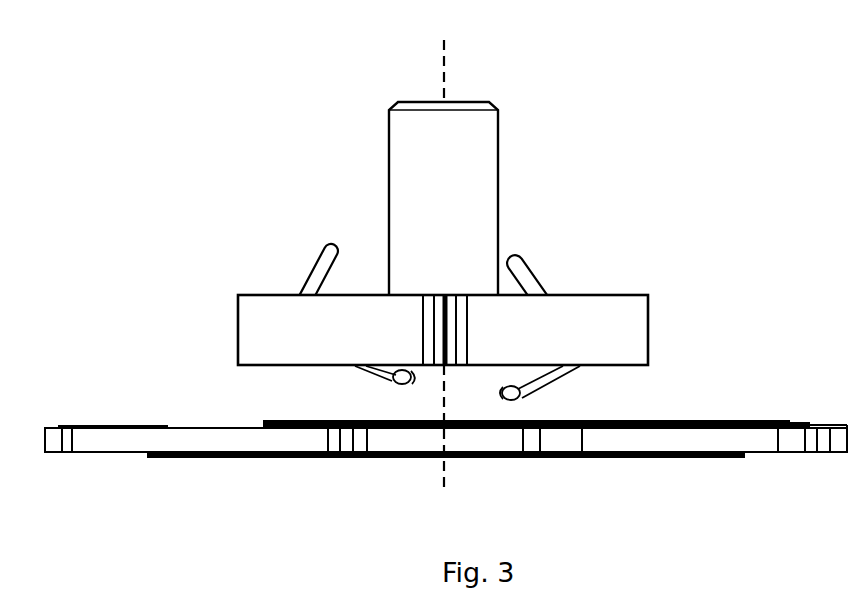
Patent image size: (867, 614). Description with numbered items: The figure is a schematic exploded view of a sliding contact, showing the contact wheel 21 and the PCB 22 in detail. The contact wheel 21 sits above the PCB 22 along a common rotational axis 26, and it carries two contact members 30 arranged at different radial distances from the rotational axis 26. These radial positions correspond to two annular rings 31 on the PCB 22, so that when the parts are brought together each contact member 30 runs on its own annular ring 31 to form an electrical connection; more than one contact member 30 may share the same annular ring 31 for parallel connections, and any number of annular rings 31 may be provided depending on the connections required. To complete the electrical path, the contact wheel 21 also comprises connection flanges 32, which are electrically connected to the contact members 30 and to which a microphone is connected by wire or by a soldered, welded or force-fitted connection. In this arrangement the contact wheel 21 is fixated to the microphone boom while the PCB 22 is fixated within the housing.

The contact wheel 21 is at (593, 332).
The PCB 22 is at (100, 442).
The rotational axis 26 is at (447, 63).
The contact members 30 is at (417, 384).
The annular rings 31 is at (293, 422).
The connection flanges 32 is at (343, 250).